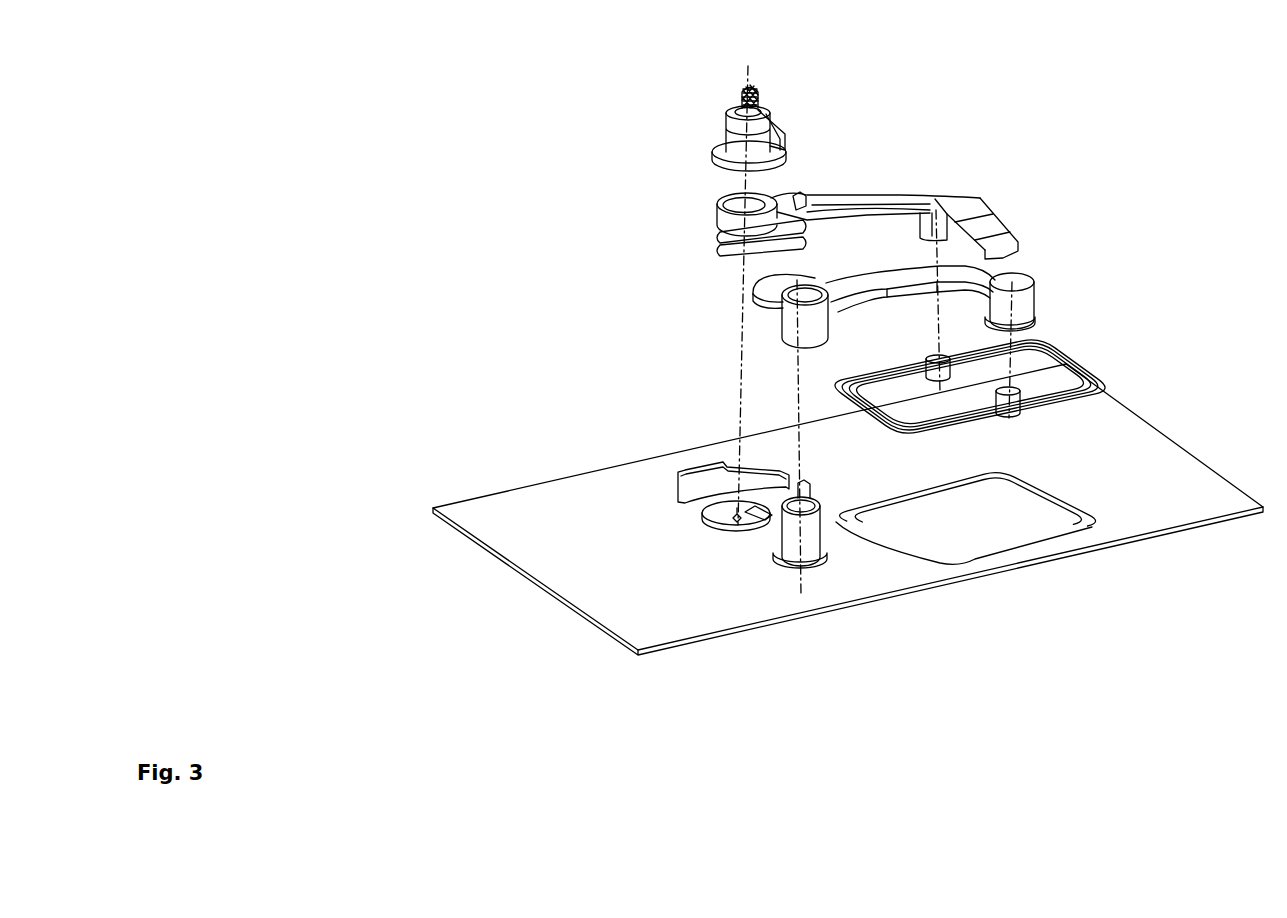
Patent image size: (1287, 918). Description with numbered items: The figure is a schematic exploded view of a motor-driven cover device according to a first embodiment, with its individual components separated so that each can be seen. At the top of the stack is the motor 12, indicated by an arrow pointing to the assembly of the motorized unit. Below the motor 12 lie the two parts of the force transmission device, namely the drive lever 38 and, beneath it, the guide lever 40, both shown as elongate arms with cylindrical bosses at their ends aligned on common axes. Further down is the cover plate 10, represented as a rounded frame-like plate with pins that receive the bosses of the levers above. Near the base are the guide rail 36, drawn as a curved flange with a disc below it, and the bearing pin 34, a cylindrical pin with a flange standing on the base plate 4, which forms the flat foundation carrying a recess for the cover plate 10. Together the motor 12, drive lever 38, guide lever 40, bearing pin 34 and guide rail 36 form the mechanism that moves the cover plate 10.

The motor 12 is at (859, 104).
The drive lever 38 is at (920, 202).
The guide lever 40 is at (1013, 283).
The cover plate 10 is at (1037, 372).
The base plate 4 is at (710, 620).
The guide rail 36 is at (700, 470).
The bearing pin 34 is at (813, 547).